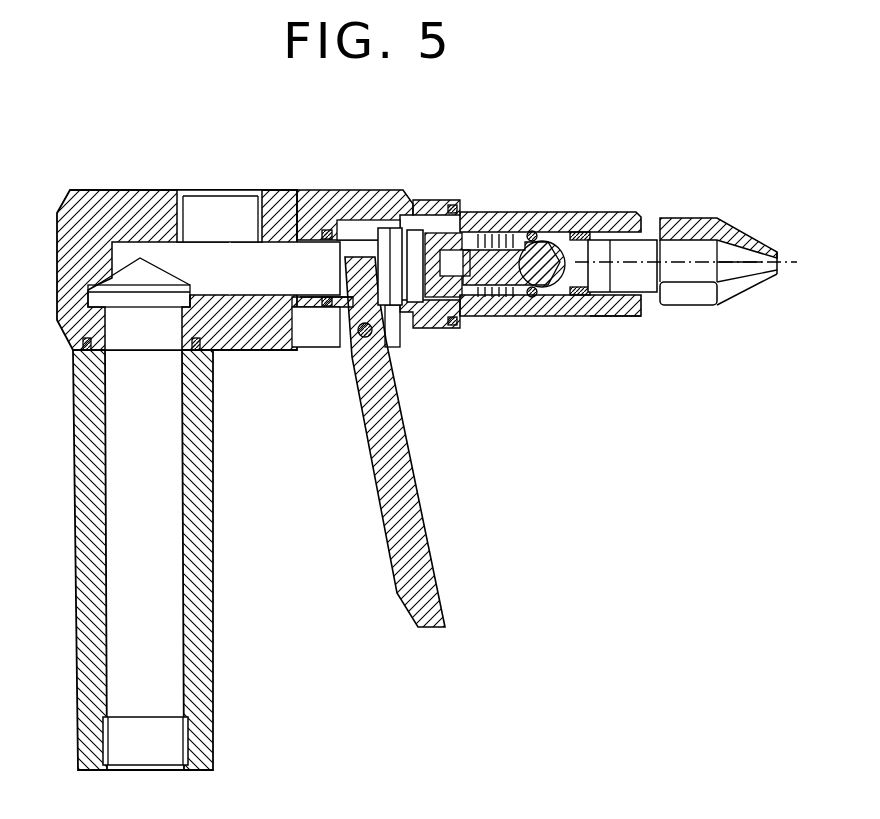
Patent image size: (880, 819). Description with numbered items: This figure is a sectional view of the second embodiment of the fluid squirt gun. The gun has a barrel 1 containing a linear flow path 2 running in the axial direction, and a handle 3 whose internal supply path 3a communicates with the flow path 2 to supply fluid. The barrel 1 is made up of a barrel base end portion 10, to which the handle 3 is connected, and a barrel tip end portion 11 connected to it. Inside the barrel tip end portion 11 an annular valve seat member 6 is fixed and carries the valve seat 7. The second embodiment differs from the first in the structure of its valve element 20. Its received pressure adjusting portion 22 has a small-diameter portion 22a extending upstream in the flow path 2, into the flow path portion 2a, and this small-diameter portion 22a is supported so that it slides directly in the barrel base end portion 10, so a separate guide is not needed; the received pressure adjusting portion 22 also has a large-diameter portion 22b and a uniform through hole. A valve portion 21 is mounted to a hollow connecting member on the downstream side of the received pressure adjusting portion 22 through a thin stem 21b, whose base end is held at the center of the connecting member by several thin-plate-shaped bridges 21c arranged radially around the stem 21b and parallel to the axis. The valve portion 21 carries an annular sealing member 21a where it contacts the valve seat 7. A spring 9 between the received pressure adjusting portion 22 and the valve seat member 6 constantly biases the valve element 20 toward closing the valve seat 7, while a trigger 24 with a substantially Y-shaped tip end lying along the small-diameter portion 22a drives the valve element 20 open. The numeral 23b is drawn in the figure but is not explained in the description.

The barrel 1 is at (150, 190).
The flow path 2 is at (261, 250).
The flow path portion upstream from the received pressure adjusting portion 2a is at (287, 265).
The handle 3 is at (197, 558).
The supply path 3a is at (157, 666).
The valve seat member 6 is at (545, 320).
The valve seat 7 is at (556, 300).
The spring 9 is at (498, 240).
The barrel base end portion 10 is at (340, 202).
The barrel tip end portion 11 is at (612, 318).
The valve element 20 is at (580, 237).
The valve portion 21 is at (566, 302).
The annular sealing member 21a is at (532, 230).
The stem 21b is at (504, 322).
The bridges 21c is at (484, 212).
The received pressure adjusting portion 22 is at (372, 190).
The small-diameter portion 22a is at (318, 268).
The large-diameter portion 22b is at (384, 335).
The coupling nut 23b is at (468, 212).
The trigger 24 is at (390, 486).